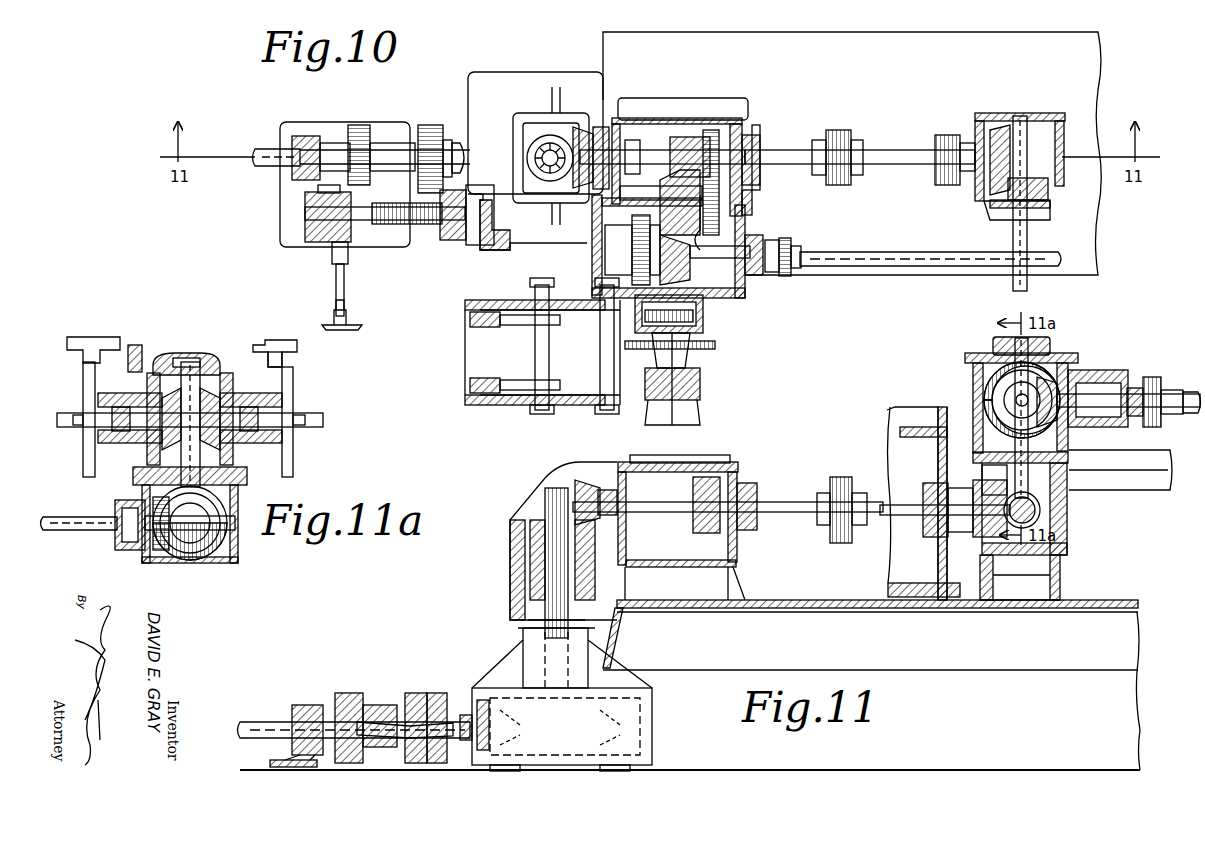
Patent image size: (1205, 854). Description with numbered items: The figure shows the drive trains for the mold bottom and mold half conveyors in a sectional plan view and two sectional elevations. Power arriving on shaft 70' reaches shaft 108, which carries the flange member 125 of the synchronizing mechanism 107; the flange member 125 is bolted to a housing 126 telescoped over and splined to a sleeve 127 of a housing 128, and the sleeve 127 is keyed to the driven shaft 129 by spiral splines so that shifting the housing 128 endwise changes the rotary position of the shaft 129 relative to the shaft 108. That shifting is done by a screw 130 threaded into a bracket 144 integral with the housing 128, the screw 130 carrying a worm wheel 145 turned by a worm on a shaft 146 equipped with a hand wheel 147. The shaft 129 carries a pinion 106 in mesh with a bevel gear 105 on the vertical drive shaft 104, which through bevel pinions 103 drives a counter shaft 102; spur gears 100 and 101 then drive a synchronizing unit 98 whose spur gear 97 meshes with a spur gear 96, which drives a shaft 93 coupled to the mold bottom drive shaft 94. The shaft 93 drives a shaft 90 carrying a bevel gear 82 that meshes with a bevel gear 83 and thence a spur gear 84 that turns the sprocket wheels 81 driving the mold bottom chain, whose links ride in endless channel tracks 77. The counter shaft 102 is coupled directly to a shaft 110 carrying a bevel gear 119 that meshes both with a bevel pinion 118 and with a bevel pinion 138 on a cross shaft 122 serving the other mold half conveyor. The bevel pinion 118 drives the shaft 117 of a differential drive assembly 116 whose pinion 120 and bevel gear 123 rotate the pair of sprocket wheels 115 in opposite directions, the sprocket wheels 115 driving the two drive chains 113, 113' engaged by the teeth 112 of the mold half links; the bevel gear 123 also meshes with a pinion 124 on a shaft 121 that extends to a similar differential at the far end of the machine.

In FIG. 10, the shaft 70' is at (264, 138).
In FIG. 10, the synchronizing mechanism 107 is at (360, 130).
In FIG. 11, the synchronizing mechanism 107 is at (354, 690).
In FIG. 10, the housing 128 is at (432, 128).
In FIG. 11, the housing 128 is at (437, 693).
In FIG. 10, the screw 130 is at (352, 208).
In FIG. 11, the screw 130 is at (372, 748).
In FIG. 10, the worm wheel 145 is at (340, 235).
In FIG. 10, the bracket 144 is at (402, 232).
In FIG. 10, the shaft 146 is at (345, 290).
In FIG. 10, the hand wheel 147 is at (352, 320).
In FIG. 10, the vertical drive shaft 104 is at (541, 152).
In FIG. 11, the vertical drive shaft 104 is at (562, 485).
In FIG. 10, the bevel pinions 103 is at (575, 130).
In FIG. 10, the counter shaft 102 is at (672, 150).
In FIG. 11, the counter shaft 102 is at (678, 488).
In FIG. 10, the synchronizing unit 98 is at (665, 185).
In FIG. 10, the spur gear 101 is at (750, 185).
In FIG. 10, the spur gear 100 is at (750, 196).
In FIG. 10, the shaft 110 is at (876, 158).
In FIG. 11A, the shaft 110 is at (188, 560).
In FIG. 11, the shaft 110 is at (878, 500).
In FIG. 10, the bevel gear 119 is at (1000, 118).
In FIG. 11A, the bevel gear 119 is at (205, 560).
In FIG. 11, the bevel gear 119 is at (996, 555).
In FIG. 10, the bevel pinion 138 is at (1048, 185).
In FIG. 11A, the bevel pinion 138 is at (158, 548).
In FIG. 10, the cross shaft 122 is at (1028, 238).
In FIG. 11A, the cross shaft 122 is at (78, 535).
In FIG. 11, the cross shaft 122 is at (1040, 511).
In FIG. 10, the mold bottom drive shaft 94 is at (826, 255).
In FIG. 10, the spur gear 97 is at (600, 232).
In FIG. 10, the bevel gear 82 is at (665, 252).
In FIG. 10, the spur gear 96 is at (632, 278).
In FIG. 10, the shaft 93 is at (735, 265).
In FIG. 10, the bevel gear 83 is at (713, 282).
In FIG. 10, the endless channel tracks 77 is at (462, 358).
In FIG. 10, the shaft 90 is at (705, 318).
In FIG. 10, the spur gear 84 is at (716, 345).
In FIG. 10, the sprocket wheels 81 is at (700, 352).
In FIG. 11A, the drive chains 113 is at (80, 339).
In FIG. 11A, the pinion 120 is at (152, 368).
In FIG. 11, the pinion 120 is at (990, 358).
In FIG. 11A, the differential drive assembly 116 is at (188, 352).
In FIG. 11A, the tooth 112 is at (292, 348).
In FIG. 11A, the drive chain 113' is at (304, 365).
In FIG. 11A, the sprocket wheels 115 is at (83, 380).
In FIG. 11A, the shaft 117 is at (181, 460).
In FIG. 11, the shaft 117 is at (1012, 388).
In FIG. 11A, the bevel gear 123 is at (218, 456).
In FIG. 11, the bevel gear 123 is at (985, 405).
In FIG. 11A, the bevel pinion 118 is at (238, 490).
In FIG. 11, the bevel pinion 118 is at (1067, 471).
In FIG. 11, the shaft 121 is at (1188, 392).
In FIG. 11, the pinion 124 is at (1070, 441).
In FIG. 11, the flange member 125 is at (325, 705).
In FIG. 11, the housing 126 is at (380, 705).
In FIG. 11, the sleeve 127 is at (404, 710).
In FIG. 11, the shaft 129 is at (455, 725).
In FIG. 11, the shaft 108 is at (265, 722).
In FIG. 11, the bevel gear 105 is at (590, 705).
In FIG. 11, the pinion 106 is at (630, 760).